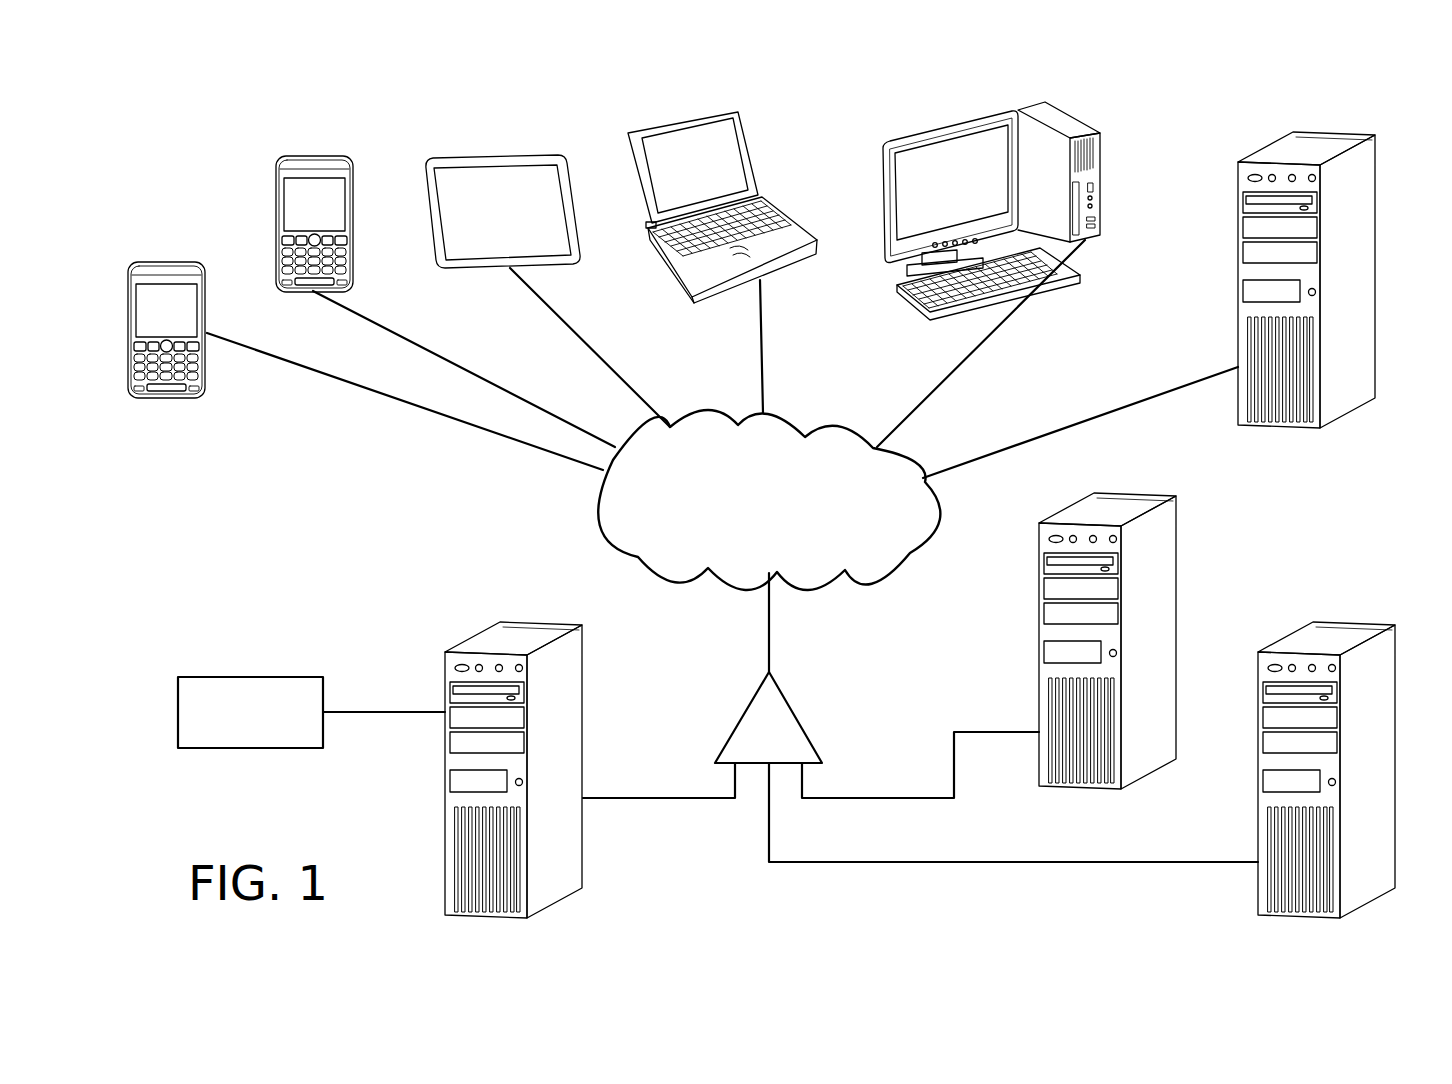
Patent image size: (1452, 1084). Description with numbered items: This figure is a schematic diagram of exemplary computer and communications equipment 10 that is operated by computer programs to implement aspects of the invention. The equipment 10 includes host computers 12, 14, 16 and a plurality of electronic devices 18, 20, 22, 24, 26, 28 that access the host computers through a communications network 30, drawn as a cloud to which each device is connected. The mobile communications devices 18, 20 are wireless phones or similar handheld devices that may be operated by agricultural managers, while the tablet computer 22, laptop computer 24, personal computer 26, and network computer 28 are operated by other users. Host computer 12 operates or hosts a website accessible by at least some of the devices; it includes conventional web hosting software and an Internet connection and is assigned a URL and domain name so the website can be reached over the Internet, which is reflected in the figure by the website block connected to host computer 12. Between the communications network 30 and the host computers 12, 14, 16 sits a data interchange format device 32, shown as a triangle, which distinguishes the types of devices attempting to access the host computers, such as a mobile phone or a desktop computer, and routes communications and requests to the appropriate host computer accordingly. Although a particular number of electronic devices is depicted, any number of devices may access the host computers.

The computer and communications equipment 10 is at (1190, 142).
The host computer 12 is at (572, 670).
The host computer 14 is at (1170, 532).
The host computer 16 is at (1368, 630).
The mobile communications device 18 is at (177, 262).
The mobile communications device 20 is at (332, 152).
The tablet computer 22 is at (512, 155).
The laptop computer 24 is at (747, 120).
The personal computer 26 is at (950, 133).
The network computer 28 is at (1365, 162).
The communications network 30 is at (615, 513).
The data interchange format device 32 is at (782, 710).